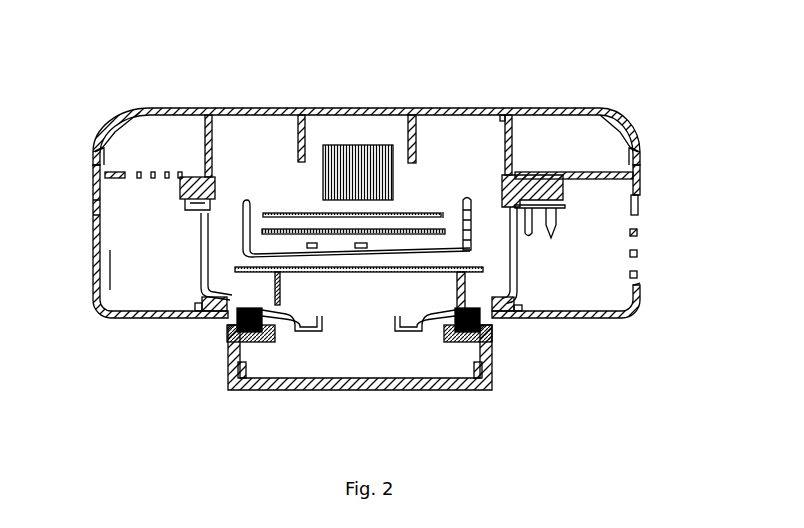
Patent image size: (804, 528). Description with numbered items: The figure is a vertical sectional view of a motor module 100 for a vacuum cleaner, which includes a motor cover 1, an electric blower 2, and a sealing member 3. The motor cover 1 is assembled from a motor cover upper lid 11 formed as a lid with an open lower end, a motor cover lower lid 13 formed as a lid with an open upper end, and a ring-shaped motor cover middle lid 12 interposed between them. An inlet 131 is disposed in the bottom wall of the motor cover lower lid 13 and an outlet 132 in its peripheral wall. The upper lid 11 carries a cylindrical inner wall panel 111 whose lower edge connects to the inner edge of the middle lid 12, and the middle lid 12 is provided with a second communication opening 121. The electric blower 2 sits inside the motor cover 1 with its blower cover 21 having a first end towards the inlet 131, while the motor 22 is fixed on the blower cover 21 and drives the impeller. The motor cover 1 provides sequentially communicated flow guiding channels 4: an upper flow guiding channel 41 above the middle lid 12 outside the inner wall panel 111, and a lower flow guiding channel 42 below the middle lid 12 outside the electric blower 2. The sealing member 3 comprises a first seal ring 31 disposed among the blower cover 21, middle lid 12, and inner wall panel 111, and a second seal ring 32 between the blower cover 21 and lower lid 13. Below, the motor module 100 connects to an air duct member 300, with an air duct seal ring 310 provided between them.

The motor module 100 is at (137, 101).
The motor cover 1 is at (700, 132).
The motor cover upper lid 11 is at (632, 135).
The motor cover middle lid 12 is at (633, 183).
The motor cover lower lid 13 is at (635, 211).
The outlet 132 is at (633, 265).
The inner wall panel 111 is at (513, 138).
The second communication opening 121 is at (163, 175).
The electric blower 2 is at (448, 8).
The blower cover 21 is at (113, 318).
The motor 22 is at (358, 172).
The sealing member 3 is at (58, 310).
The first seal ring 31 is at (113, 316).
The second seal ring 32 is at (207, 308).
The flow guiding channel 4 is at (43, 193).
The upper flow guiding channel 41 is at (128, 145).
The lower flow guiding channel 42 is at (133, 230).
The inlet 131 is at (365, 323).
The air duct member 300 is at (490, 375).
The air duct seal ring 310 is at (490, 333).